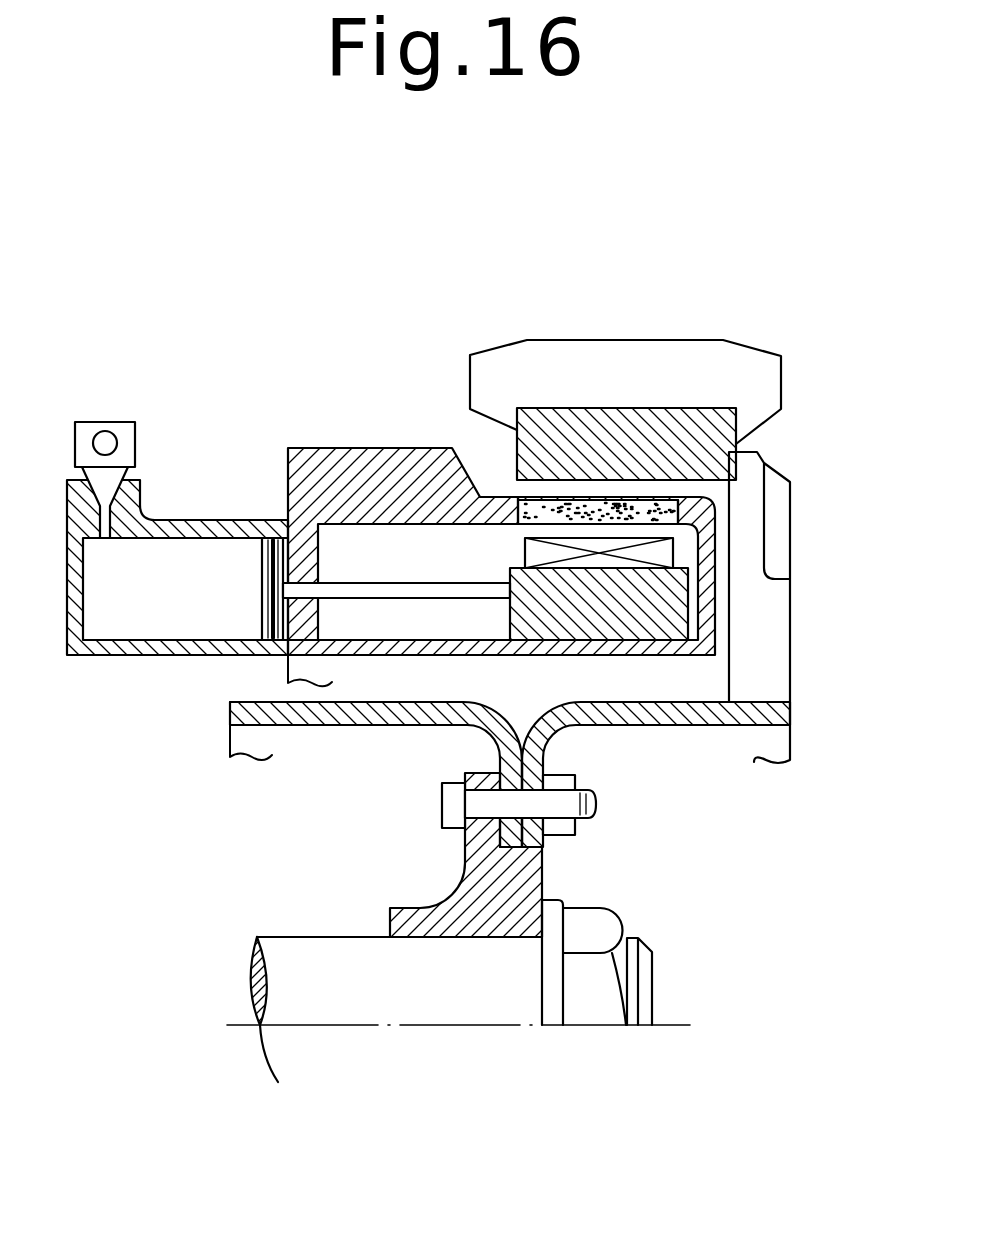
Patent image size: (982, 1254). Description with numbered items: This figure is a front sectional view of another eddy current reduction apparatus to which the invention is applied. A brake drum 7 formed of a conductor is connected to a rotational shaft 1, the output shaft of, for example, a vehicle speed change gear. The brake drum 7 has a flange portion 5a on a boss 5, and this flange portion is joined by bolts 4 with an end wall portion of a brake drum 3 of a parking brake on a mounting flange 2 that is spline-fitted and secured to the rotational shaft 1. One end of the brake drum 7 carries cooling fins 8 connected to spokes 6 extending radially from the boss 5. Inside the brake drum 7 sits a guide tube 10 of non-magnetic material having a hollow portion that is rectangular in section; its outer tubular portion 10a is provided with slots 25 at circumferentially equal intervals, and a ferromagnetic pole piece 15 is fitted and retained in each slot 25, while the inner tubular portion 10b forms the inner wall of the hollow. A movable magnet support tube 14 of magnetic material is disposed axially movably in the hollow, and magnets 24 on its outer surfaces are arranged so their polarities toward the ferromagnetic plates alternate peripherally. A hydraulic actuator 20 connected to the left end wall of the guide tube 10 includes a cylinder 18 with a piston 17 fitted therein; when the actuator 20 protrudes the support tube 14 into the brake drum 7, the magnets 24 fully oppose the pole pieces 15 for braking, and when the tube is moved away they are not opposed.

The rotational shaft 1 is at (305, 977).
The mounting flange 2 is at (487, 880).
The brake drum of parking brake 3 is at (313, 714).
The bolts 4 is at (600, 812).
The boss 5 is at (721, 725).
The flange portion 5a is at (543, 762).
The spokes 6 is at (780, 625).
The brake drum 7 is at (698, 448).
The cooling fins 8 is at (765, 374).
The guide tube 10 is at (310, 438).
The outer tubular portion 10a is at (418, 470).
The inner tubular portion 10b is at (455, 656).
The movable magnet support tube 14 is at (614, 625).
The ferromagnetic pole piece 15 is at (598, 514).
The piston 17 is at (262, 590).
The cylinder 18 is at (165, 646).
The actuator 20 is at (91, 661).
The magnets 24 is at (525, 549).
The slots 25 is at (672, 513).